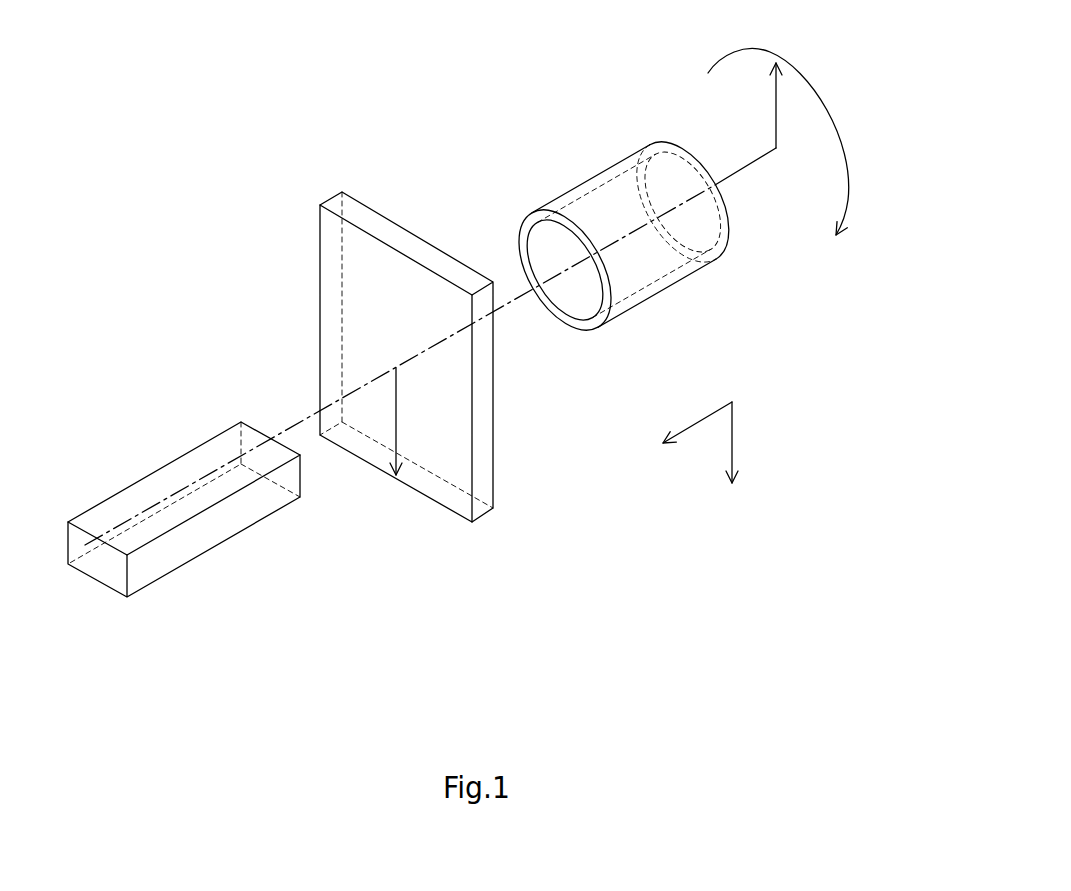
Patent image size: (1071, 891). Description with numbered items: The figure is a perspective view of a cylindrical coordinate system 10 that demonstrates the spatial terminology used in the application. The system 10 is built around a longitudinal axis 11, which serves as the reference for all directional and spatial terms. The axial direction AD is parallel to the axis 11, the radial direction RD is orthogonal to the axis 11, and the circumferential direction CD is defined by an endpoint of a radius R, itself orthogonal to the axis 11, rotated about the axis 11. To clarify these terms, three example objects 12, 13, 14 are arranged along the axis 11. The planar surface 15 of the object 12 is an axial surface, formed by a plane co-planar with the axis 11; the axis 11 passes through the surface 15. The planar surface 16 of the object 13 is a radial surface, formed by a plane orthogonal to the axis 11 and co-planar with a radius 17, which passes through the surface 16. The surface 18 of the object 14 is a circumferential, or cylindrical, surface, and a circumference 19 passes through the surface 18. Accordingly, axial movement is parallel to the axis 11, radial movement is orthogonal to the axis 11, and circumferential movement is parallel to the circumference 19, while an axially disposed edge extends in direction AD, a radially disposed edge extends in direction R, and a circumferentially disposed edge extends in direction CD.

The cylindrical coordinate system 10 is at (277, 240).
The longitudinal axis 11 is at (727, 175).
The object 12 is at (184, 538).
The object 13 is at (409, 379).
The object 14 is at (586, 246).
The axial surface 15 is at (145, 492).
The radial surface 16 is at (335, 318).
The radius 17 is at (396, 417).
The circumferential surface 18 is at (592, 175).
The circumference 19 is at (522, 237).
The radius R is at (775, 102).
The circumferential direction CD is at (827, 109).
The axial direction AD is at (697, 421).
The radial direction RD is at (732, 437).